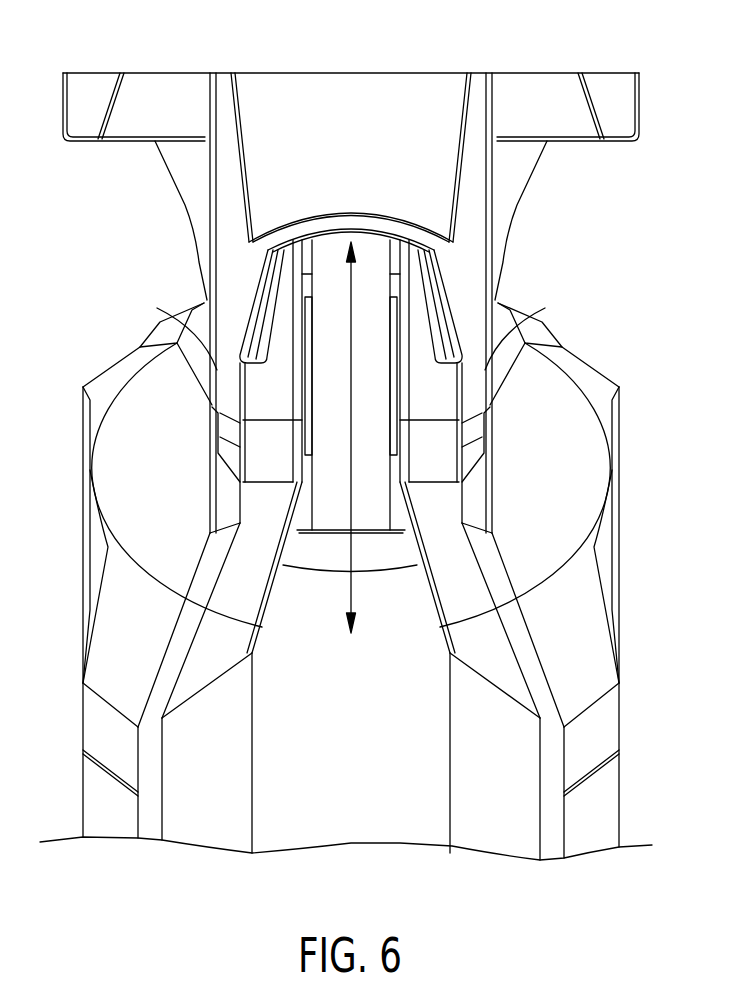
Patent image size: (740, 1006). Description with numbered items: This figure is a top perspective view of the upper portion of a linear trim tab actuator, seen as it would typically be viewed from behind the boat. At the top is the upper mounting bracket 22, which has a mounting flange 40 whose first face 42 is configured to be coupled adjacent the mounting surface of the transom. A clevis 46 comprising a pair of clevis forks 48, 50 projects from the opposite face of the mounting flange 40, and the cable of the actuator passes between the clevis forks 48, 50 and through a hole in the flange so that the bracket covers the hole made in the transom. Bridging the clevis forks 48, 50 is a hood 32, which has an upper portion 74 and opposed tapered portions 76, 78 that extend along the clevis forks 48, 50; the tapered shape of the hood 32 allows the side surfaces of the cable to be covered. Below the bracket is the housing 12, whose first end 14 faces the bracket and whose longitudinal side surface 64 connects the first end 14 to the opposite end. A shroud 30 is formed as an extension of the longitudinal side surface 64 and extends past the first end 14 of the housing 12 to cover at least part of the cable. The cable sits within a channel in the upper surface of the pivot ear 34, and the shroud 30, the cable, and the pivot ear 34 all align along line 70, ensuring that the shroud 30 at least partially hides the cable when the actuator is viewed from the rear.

The housing 12 is at (620, 797).
The first end 14 is at (577, 474).
The upper mounting bracket 22 is at (92, 73).
The shroud 30 is at (437, 585).
The hood 32 is at (425, 104).
The pivot ear 34 is at (286, 532).
The mounting flange 40 is at (62, 92).
The first face 42 is at (526, 63).
The clevis 46 is at (186, 211).
The clevis fork 48 is at (228, 377).
The clevis fork 50 is at (527, 313).
The longitudinal side surface 64 is at (366, 787).
The line 70 is at (353, 593).
The upper portion 74 is at (318, 147).
The tapered portion 76 is at (263, 311).
The tapered portion 78 is at (438, 291).